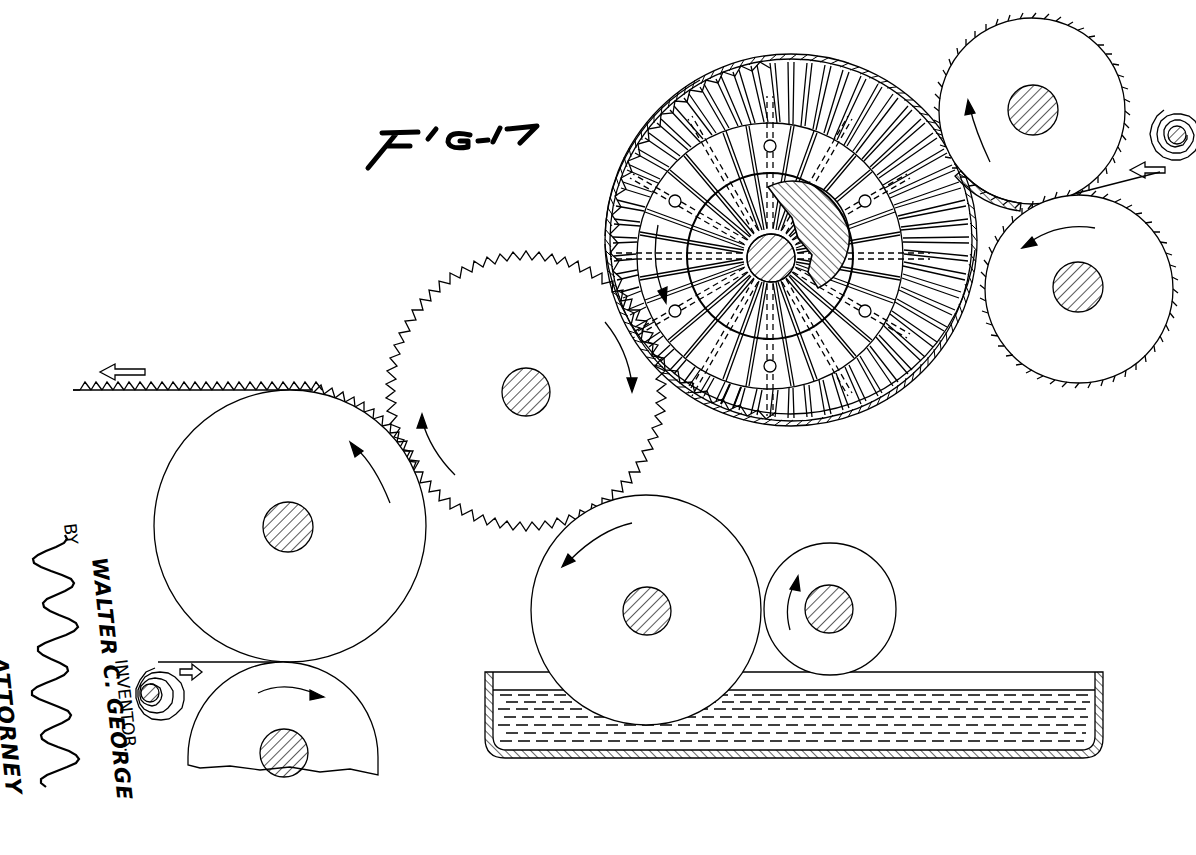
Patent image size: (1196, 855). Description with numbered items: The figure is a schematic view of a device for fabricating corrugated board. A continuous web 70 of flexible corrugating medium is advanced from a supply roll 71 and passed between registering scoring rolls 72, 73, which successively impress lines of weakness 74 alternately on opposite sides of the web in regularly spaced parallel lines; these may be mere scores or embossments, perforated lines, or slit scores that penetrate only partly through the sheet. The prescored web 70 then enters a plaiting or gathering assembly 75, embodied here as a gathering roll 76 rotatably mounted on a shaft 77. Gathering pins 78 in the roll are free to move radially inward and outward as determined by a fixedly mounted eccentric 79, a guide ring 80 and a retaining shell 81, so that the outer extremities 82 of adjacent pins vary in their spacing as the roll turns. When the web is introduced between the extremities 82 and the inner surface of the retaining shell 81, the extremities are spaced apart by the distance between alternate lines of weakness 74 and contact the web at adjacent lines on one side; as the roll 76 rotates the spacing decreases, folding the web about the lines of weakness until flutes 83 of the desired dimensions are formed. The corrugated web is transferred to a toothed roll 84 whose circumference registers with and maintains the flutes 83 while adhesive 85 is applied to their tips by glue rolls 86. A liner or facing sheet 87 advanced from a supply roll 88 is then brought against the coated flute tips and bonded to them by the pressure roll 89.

The continuous web 70 is at (776, 56).
The supply roll 71 is at (1175, 110).
The scoring roll 72 is at (1032, 111).
The scoring roll 73 is at (1079, 289).
The lines of weakness 74 is at (905, 100).
The plaiting or gathering assembly 75 is at (856, 416).
The gathering roll 76 is at (780, 388).
The shaft 77 is at (768, 244).
The gathering pins 78 is at (640, 152).
The eccentric 79 is at (822, 185).
The guide ring 80 is at (745, 395).
The retaining shell 81 is at (690, 100).
The outer extremities 82 is at (940, 145).
The flutes 83 is at (186, 388).
The toothed roll 84 is at (526, 391).
The adhesive 85 is at (905, 683).
The glue rolls 86 is at (713, 610).
The liner or facing sheet 87 is at (138, 396).
The supply roll 88 is at (152, 722).
The pressure roll 89 is at (290, 526).